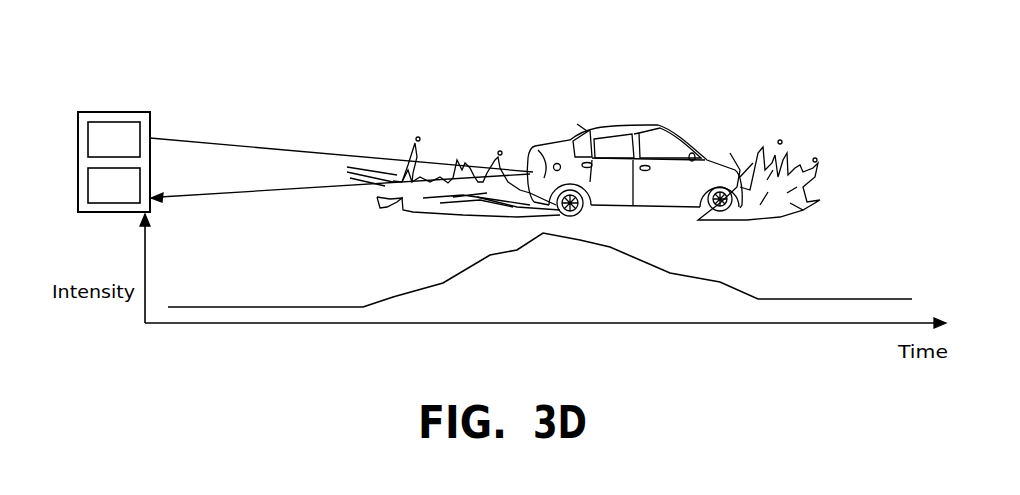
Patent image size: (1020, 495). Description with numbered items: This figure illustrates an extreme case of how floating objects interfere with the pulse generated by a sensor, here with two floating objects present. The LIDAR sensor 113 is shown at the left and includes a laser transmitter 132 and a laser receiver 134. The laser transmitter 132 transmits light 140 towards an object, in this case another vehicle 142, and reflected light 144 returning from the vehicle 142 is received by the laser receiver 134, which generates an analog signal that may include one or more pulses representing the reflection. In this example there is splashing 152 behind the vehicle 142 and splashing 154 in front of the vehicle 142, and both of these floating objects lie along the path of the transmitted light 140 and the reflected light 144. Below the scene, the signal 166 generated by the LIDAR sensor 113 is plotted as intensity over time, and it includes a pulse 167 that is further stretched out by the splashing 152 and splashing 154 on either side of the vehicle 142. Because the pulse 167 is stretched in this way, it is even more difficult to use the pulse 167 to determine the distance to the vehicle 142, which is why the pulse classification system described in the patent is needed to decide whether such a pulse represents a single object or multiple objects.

The LIDAR sensor 113 is at (110, 112).
The laser transmitter 132 is at (88, 141).
The laser receiver 134 is at (88, 185).
The light 140 is at (250, 147).
The reflected light 144 is at (265, 190).
The vehicle 142 is at (665, 128).
The splashing 152 is at (450, 210).
The splashing 154 is at (745, 218).
The signal 166 is at (252, 307).
The pulse 167 is at (612, 247).